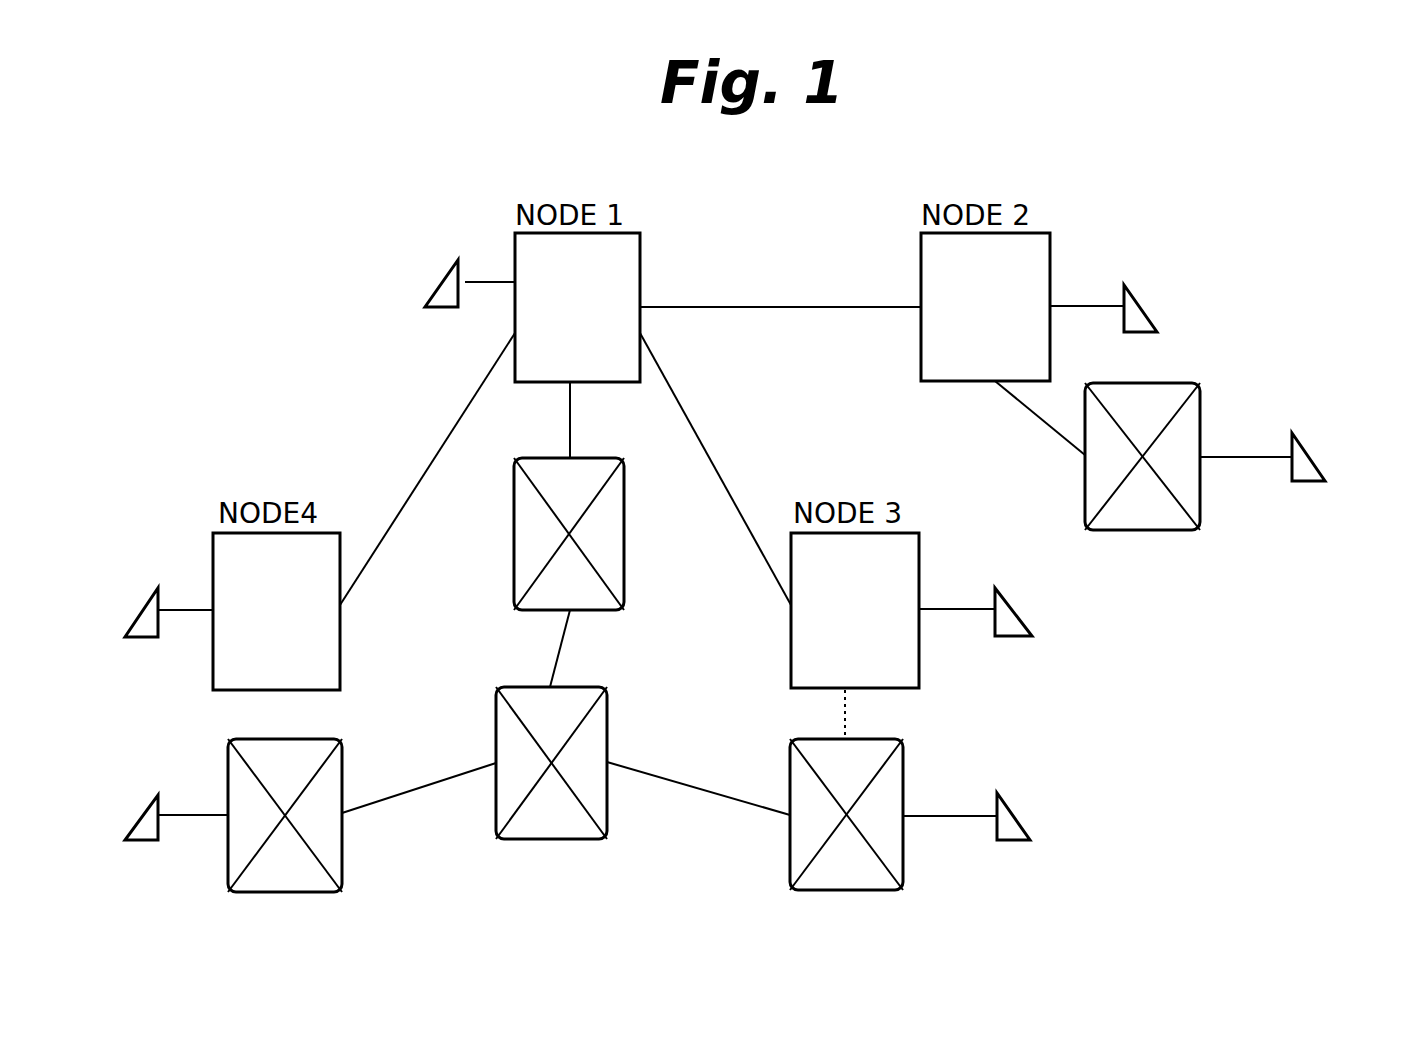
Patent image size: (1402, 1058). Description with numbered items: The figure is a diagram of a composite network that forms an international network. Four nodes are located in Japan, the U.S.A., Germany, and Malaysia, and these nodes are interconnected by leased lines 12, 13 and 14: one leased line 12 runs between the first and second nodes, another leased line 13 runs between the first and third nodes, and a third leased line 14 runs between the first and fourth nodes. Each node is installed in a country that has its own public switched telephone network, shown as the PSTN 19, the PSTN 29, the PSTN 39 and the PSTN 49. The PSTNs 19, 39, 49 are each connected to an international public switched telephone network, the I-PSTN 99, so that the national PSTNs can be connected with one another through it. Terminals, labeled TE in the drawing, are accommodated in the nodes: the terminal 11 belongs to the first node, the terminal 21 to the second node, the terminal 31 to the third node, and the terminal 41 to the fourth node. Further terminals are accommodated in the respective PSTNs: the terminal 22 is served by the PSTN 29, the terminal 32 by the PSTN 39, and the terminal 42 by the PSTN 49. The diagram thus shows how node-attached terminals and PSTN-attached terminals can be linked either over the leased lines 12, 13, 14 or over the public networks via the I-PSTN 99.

The terminal 11 is at (452, 266).
The leased line 12 is at (780, 288).
The leased line 13 is at (715, 469).
The leased line 14 is at (427, 469).
The public switched telephone network 19 is at (548, 534).
The terminal 21 is at (1121, 289).
The terminal 22 is at (1280, 438).
The public switched telephone network 29 is at (1097, 439).
The terminal 31 is at (993, 592).
The terminal 32 is at (984, 798).
The public switched telephone network 39 is at (755, 790).
The terminal 41 is at (149, 593).
The terminal 42 is at (156, 799).
The public switched telephone network 49 is at (362, 799).
The international public switched telephone network 99 is at (517, 744).